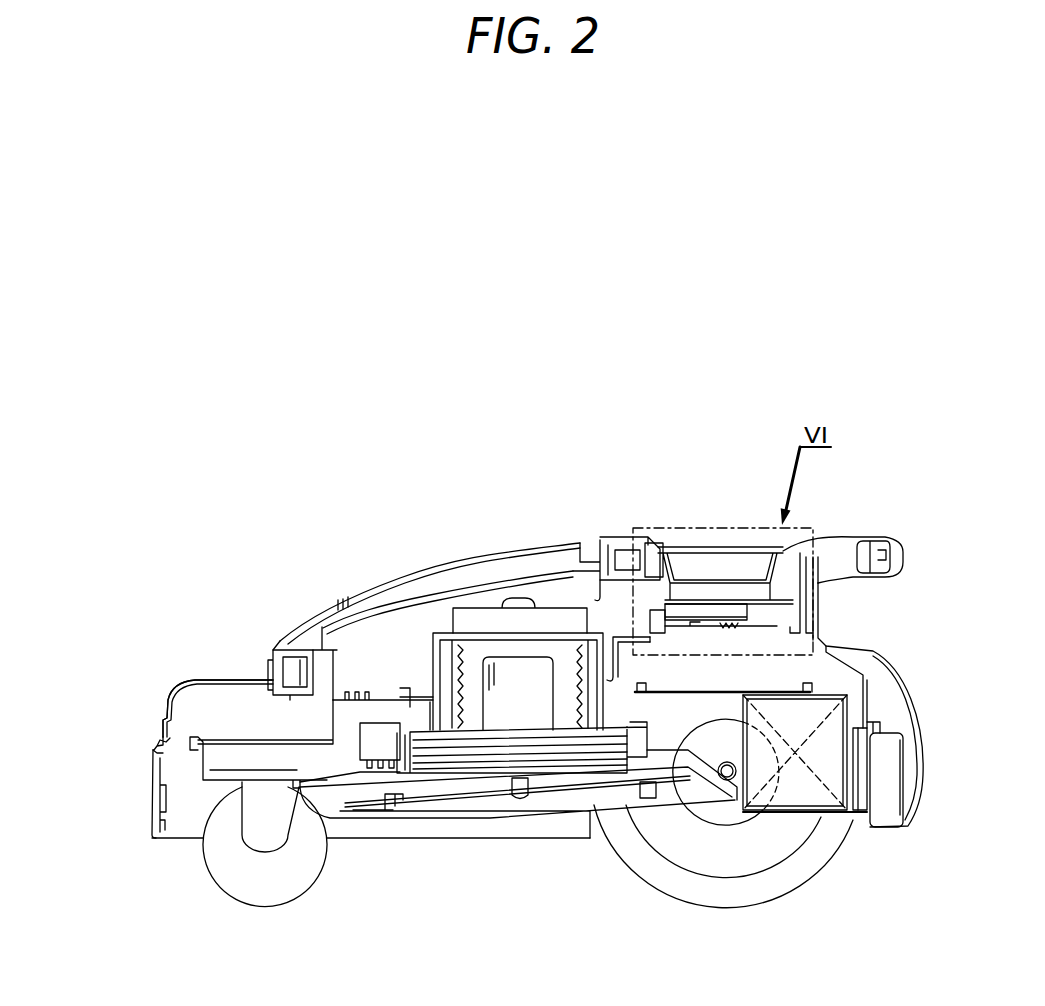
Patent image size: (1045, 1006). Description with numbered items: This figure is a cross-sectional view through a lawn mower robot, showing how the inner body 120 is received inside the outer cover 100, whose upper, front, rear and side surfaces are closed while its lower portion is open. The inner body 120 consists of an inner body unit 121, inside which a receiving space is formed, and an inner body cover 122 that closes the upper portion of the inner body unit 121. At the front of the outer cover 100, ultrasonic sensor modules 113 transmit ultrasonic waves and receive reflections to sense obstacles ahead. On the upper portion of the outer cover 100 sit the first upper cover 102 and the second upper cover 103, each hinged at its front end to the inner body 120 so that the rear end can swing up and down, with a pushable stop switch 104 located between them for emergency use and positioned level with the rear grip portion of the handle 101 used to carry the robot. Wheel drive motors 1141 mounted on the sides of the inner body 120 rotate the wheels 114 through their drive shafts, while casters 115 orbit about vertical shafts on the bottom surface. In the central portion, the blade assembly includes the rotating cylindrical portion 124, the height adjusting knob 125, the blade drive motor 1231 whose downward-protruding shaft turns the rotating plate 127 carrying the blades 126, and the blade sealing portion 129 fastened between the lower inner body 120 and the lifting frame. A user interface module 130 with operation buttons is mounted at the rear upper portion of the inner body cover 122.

The outer cover 100 is at (137, 770).
The handle 101 is at (843, 547).
The first upper cover 102 is at (488, 550).
The second upper cover 103 is at (703, 547).
The stop switch 104 is at (623, 537).
The ultrasonic sensor module 113 is at (268, 672).
The wheel 114 is at (775, 883).
The wheel drive motor 1141 is at (710, 813).
The caster 115 is at (232, 887).
The inner body 120 is at (198, 625).
The inner body unit 121 is at (155, 742).
The inner body cover 122 is at (218, 737).
The rotating cylindrical portion 124 is at (470, 675).
The height adjusting knob 125 is at (552, 755).
The blade 126 is at (373, 809).
The rotating plate 127 is at (444, 796).
The blade sealing portion 129 is at (557, 760).
The blade drive motor 1231 is at (502, 707).
The user interface module 130 is at (739, 578).